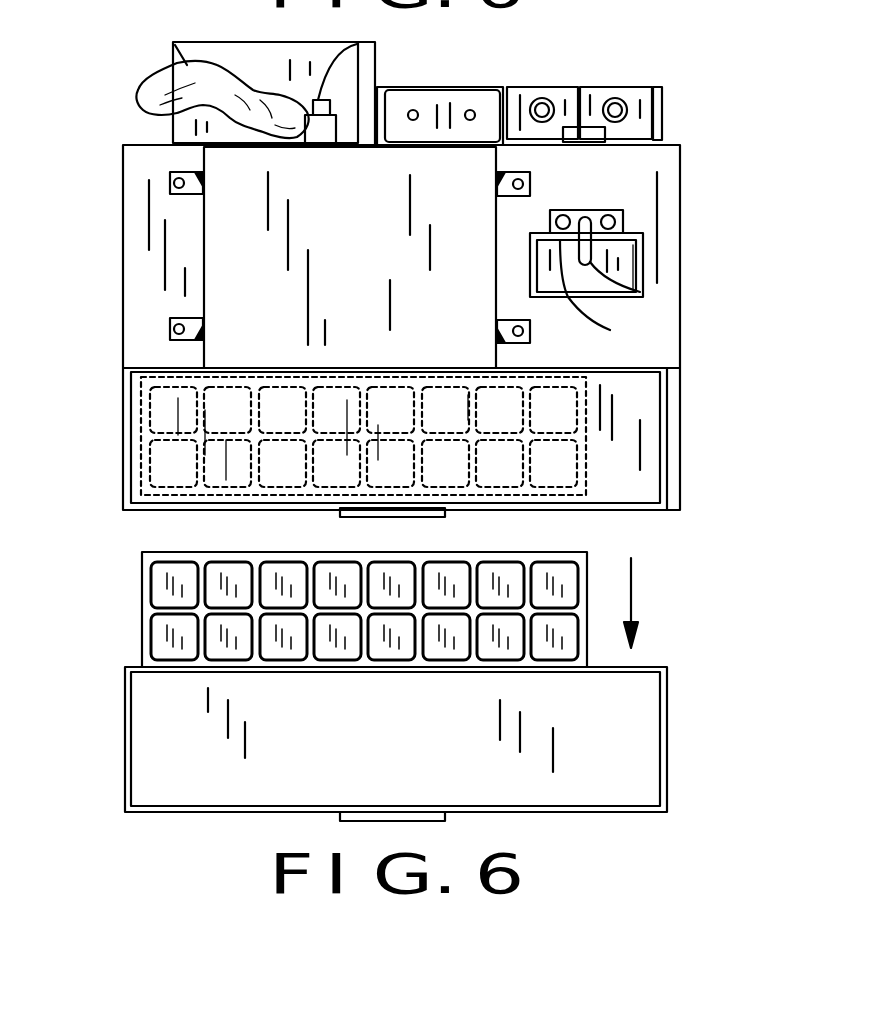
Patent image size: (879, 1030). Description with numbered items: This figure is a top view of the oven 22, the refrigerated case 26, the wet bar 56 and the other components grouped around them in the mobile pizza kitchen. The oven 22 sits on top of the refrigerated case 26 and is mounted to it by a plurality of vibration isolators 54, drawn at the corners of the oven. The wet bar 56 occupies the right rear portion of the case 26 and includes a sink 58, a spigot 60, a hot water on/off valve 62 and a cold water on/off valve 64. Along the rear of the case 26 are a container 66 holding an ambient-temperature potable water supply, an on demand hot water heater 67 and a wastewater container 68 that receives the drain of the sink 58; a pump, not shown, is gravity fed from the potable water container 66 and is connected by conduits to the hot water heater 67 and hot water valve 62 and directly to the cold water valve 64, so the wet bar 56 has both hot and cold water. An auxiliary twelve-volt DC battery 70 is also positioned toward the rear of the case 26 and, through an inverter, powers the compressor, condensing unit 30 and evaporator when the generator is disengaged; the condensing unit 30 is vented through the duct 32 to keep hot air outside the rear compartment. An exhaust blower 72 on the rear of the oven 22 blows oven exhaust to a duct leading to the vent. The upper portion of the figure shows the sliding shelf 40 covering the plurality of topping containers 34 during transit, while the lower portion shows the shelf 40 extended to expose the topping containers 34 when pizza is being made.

The oven 22 is at (378, 234).
The refrigerated case 26 is at (123, 240).
The condensing unit 30 is at (235, 42).
The duct 32 is at (175, 42).
The topping containers 34 is at (152, 408).
The sliding shelf 40 is at (123, 480).
The vibration isolators 54 is at (170, 183).
The wet bar 56 is at (643, 272).
The sink 58 is at (630, 248).
The spigot 60 is at (640, 292).
The hot water on/off valve 62 is at (610, 330).
The cold water on/off valve 64 is at (618, 211).
The potable water container 66 is at (518, 83).
The on demand hot water heater 67 is at (577, 130).
The wastewater container 68 is at (623, 83).
The auxiliary 12-volt DC battery 70 is at (432, 87).
The exhaust blower 72 is at (375, 42).